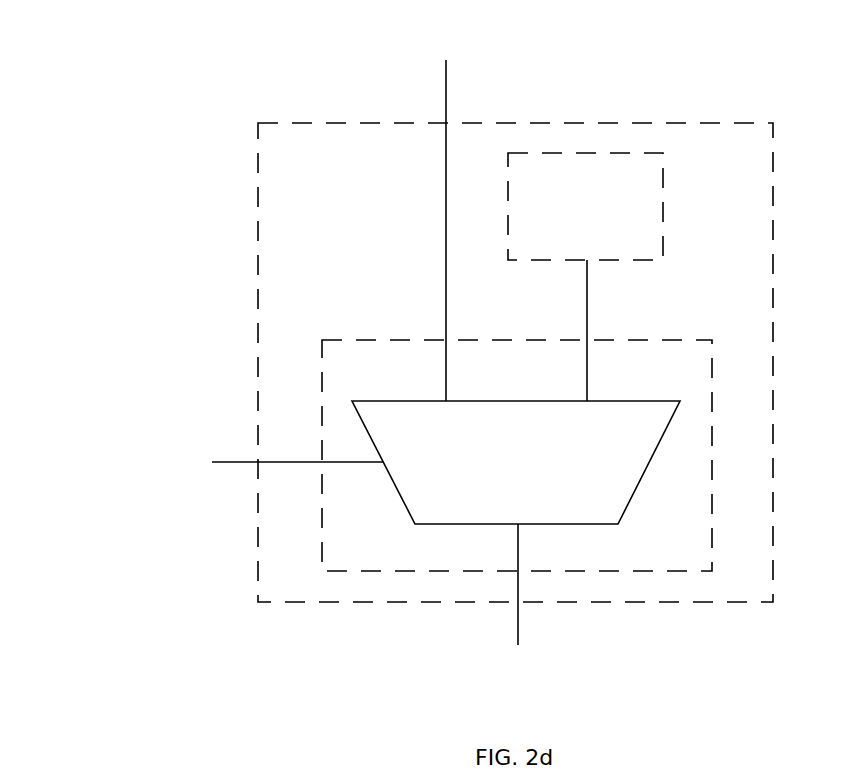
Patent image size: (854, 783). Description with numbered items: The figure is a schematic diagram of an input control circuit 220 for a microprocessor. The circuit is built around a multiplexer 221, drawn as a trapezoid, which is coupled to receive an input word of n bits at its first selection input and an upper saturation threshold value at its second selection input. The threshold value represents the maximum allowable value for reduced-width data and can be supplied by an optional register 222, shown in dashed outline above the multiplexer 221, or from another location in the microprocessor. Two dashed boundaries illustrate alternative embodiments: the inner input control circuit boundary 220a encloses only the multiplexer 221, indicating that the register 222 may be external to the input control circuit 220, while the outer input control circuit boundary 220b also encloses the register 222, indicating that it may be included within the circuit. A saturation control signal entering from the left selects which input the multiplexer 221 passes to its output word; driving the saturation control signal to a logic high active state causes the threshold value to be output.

The input control circuit 220 is at (124, 97).
The input control circuit boundary 220a is at (367, 339).
The input control circuit boundary 220b is at (367, 121).
The multiplexer 221 is at (538, 474).
The register 222 is at (604, 211).